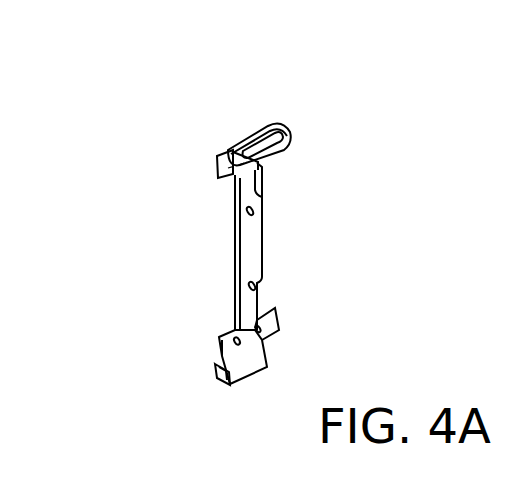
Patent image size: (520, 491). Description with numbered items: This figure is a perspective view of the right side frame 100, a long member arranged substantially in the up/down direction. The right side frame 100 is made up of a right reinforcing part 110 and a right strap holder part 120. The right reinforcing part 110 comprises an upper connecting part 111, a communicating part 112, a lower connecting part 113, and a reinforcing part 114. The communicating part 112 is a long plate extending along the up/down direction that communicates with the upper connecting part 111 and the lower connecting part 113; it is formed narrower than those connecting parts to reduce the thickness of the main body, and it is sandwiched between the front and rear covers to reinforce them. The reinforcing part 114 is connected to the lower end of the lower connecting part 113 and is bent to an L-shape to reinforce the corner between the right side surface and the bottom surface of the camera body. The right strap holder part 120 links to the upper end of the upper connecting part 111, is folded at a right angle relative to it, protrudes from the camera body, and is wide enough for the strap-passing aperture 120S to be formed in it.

The right side frame 100 is at (294, 83).
The right reinforcing part 110 is at (125, 221).
The upper connecting part 111 is at (221, 167).
The communicating part 112 is at (250, 233).
The lower connecting part 113 is at (218, 342).
The reinforcing part 114 is at (214, 378).
The right strap holder part 120 is at (241, 141).
The strap-passing aperture 120S is at (283, 134).